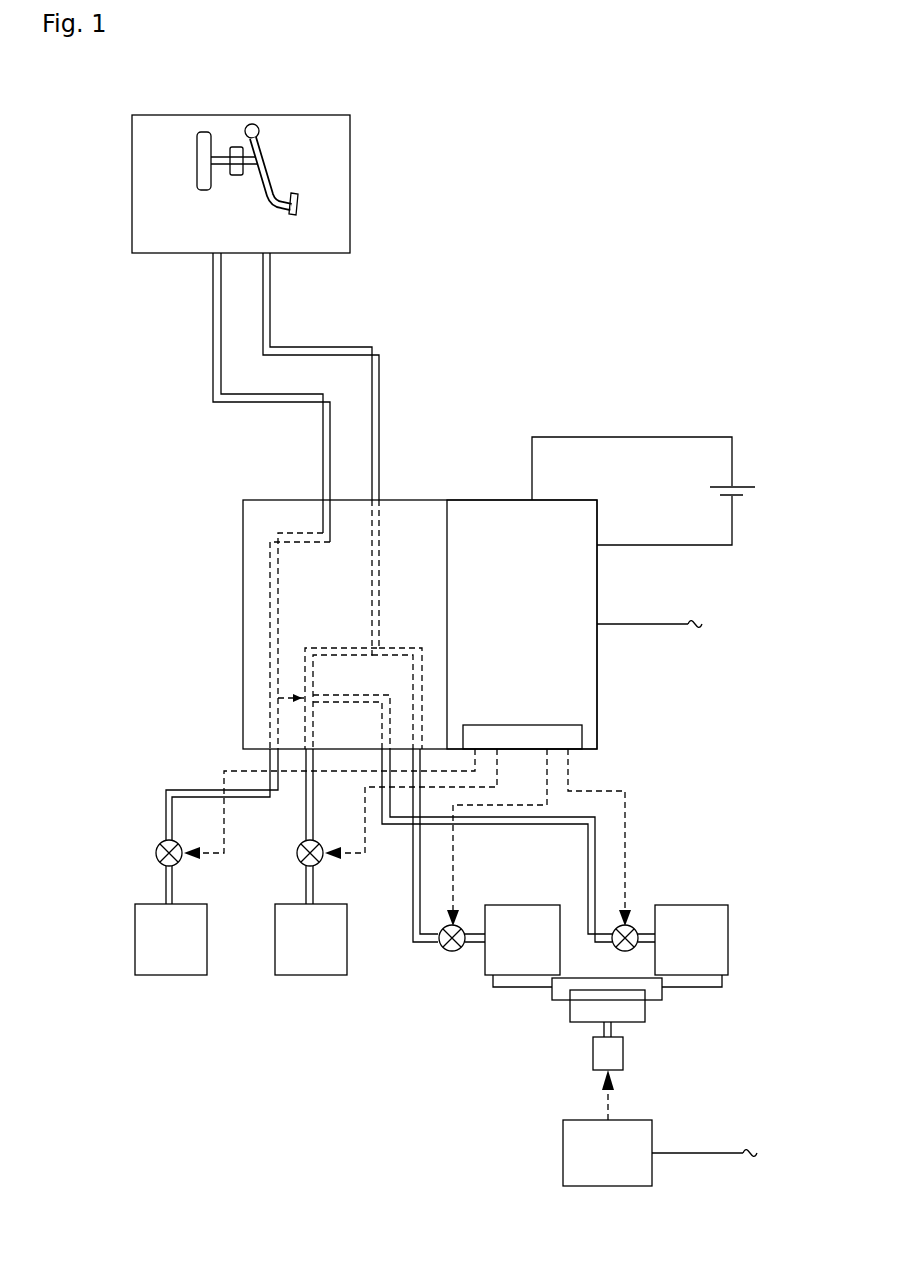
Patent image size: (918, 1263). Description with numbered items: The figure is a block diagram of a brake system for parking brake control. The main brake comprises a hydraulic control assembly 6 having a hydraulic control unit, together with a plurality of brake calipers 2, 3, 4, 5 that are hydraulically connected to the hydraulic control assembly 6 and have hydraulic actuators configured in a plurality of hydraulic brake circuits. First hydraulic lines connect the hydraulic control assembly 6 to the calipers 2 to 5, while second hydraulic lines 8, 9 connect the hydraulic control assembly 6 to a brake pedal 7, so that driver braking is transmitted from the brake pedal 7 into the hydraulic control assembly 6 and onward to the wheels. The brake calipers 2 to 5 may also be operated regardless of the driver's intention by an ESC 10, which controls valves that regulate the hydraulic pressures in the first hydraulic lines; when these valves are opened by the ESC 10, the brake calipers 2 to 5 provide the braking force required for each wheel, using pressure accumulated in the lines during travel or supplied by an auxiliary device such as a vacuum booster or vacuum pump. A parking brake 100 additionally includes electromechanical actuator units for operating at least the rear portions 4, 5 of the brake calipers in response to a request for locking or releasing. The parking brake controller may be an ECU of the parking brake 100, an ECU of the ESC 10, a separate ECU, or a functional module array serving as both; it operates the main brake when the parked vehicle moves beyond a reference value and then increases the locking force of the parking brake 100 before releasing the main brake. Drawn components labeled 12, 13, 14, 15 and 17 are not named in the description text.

The brake caliper 2 is at (170, 976).
The brake caliper 3 is at (310, 976).
The brake caliper 4 is at (513, 988).
The brake caliper 5 is at (690, 978).
The hydraulic control assembly 6 is at (232, 678).
The brake pedal 7 is at (238, 113).
The second hydraulic line 8 is at (270, 302).
The second hydraulic line 9 is at (213, 327).
The ESC 10 is at (612, 703).
The front right wheel valve 12 is at (165, 818).
The front left wheel valve 13 is at (305, 818).
The pressure sensor / rear right wheel valve 14 is at (412, 907).
The rear left wheel valve 15 is at (595, 860).
The pressure sensor unit 17 is at (632, 435).
The parking brake 100 is at (475, 968).